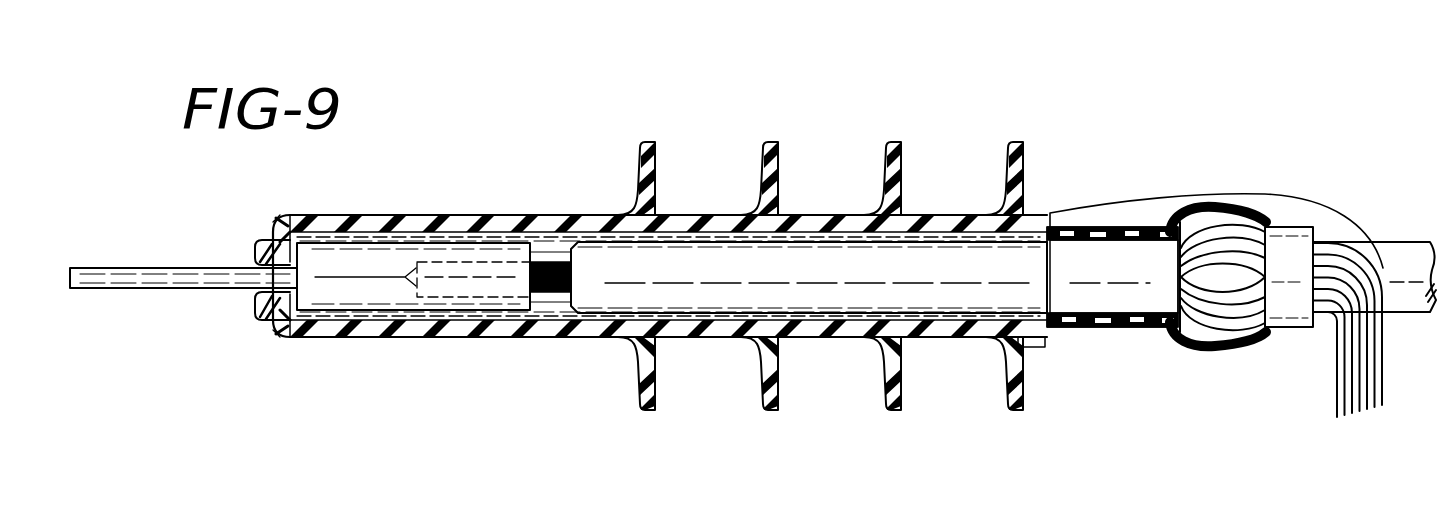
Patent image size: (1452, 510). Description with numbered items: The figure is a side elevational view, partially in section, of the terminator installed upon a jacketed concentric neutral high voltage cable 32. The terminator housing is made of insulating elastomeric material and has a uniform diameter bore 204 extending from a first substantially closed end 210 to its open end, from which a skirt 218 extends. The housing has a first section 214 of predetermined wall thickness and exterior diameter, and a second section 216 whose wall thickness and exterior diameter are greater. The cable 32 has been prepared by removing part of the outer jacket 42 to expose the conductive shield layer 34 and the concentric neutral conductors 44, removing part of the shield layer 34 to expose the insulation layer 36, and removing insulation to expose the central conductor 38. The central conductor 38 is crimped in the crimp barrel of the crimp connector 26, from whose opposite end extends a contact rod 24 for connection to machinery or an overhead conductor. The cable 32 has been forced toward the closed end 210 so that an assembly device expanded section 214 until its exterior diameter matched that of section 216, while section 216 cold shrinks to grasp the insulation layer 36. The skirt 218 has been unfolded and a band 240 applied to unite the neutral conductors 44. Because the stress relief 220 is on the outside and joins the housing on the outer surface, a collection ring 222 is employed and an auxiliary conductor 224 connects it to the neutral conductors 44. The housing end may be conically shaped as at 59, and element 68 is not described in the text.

The contact rod 24 is at (105, 277).
The first substantially closed end 210 is at (272, 232).
The crimp connector 26 is at (343, 262).
The central conductor 38 is at (543, 258).
The conically shaped portion 59 is at (762, 160).
The bore 204 is at (938, 255).
The conductive shield layer 34 is at (1090, 257).
The auxiliary conductor 224 is at (1140, 197).
The skirt 218 is at (1195, 208).
The concentric neutral conductors 44 is at (1225, 238).
The outer jacket 42 is at (1397, 253).
The seal 68 is at (257, 295).
The first section 214 is at (348, 342).
The insulation layer 36 is at (745, 279).
The second section 216 is at (925, 343).
The collection ring 222 is at (1027, 347).
The stress relief 220 is at (1068, 325).
The band 240 is at (1287, 308).
The cable 32 is at (1403, 305).